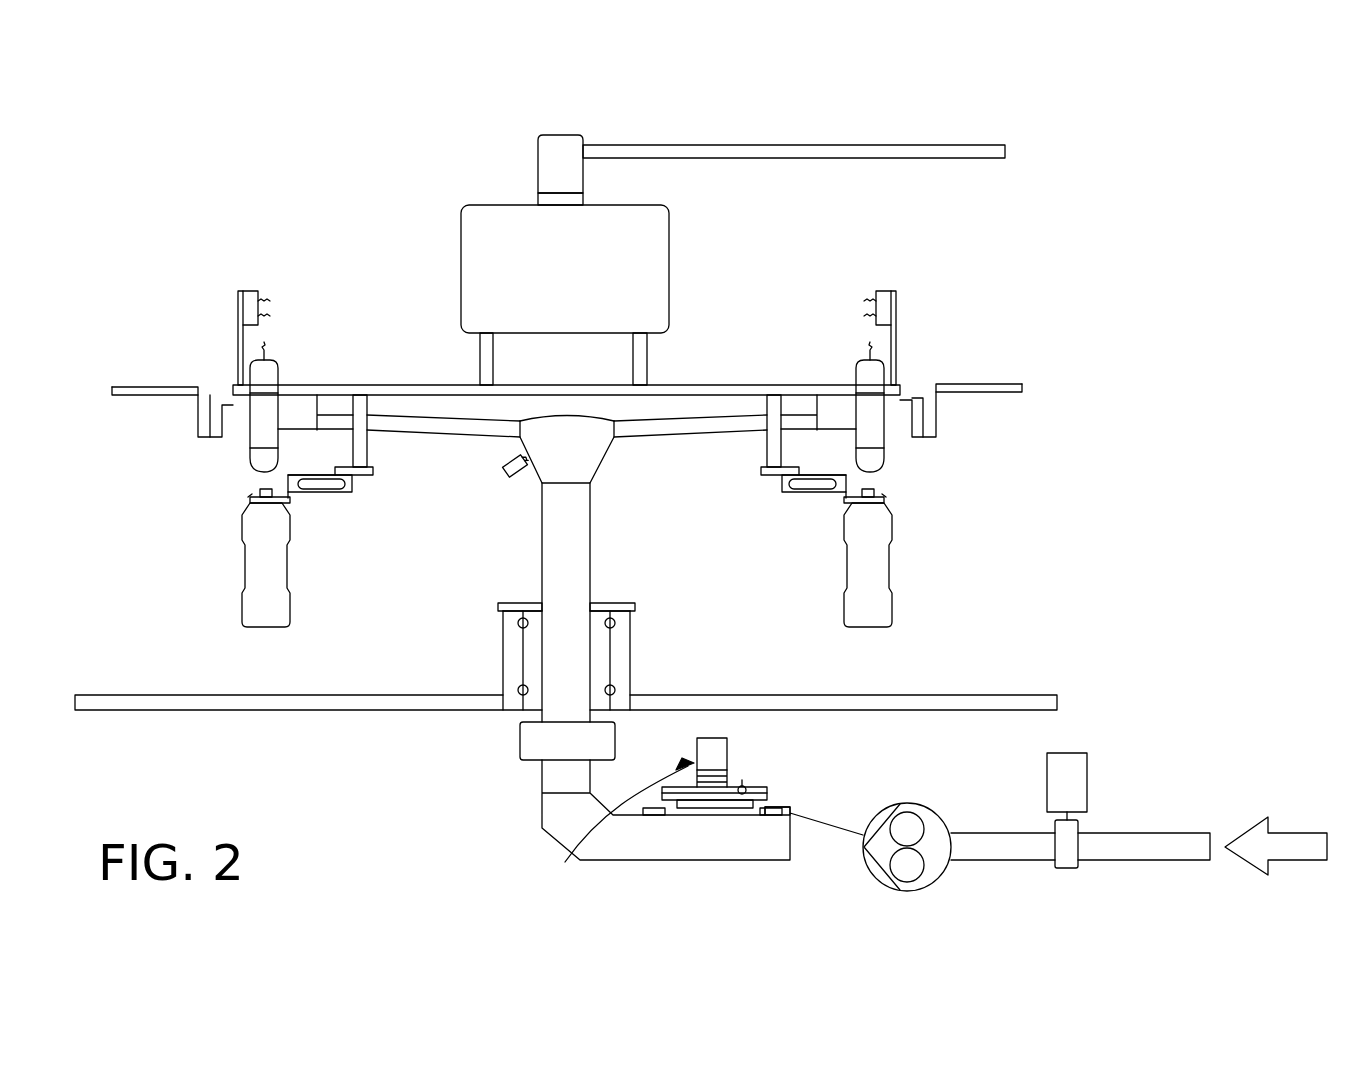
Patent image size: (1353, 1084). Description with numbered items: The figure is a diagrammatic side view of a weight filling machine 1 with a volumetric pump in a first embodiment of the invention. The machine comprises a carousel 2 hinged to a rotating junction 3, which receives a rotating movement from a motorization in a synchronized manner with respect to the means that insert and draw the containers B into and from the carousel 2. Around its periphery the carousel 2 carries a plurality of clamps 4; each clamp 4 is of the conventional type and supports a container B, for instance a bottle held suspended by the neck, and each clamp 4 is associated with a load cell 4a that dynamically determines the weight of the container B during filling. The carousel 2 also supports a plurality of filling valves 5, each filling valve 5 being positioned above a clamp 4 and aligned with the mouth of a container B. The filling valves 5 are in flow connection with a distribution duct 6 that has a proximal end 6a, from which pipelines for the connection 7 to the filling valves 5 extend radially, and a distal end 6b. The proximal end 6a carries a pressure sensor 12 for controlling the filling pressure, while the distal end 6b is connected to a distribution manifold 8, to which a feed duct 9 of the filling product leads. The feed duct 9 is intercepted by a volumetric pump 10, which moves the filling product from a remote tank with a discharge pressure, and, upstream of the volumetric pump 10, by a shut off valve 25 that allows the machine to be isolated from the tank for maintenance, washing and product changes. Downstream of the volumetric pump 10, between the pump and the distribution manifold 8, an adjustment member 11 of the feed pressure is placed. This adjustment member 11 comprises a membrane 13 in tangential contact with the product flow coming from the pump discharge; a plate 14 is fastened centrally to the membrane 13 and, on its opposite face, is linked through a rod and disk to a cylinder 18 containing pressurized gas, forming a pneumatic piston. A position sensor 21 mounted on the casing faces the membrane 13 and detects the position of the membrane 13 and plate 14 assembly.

The weight filling machine 1 is at (310, 183).
The carousel 2 is at (372, 385).
The rotating junction 3 is at (585, 140).
The clamp 4 is at (290, 503).
The load cell 4a is at (326, 494).
The filling valve 5 is at (250, 428).
The distribution duct 6 is at (592, 553).
The proximal end 6a is at (597, 470).
The distal end 6b is at (553, 710).
The pipeline for the connection 7 is at (452, 437).
The distribution manifold 8 is at (520, 748).
The feed duct 9 is at (598, 862).
The volumetric pump 10 is at (895, 805).
The adjustment member 11 is at (560, 860).
The pressure sensor 12 is at (505, 477).
The membrane 13 is at (782, 800).
The plate 14 is at (745, 818).
The cylinder 18 is at (742, 765).
The position sensor 21 is at (762, 790).
The shut off valve 25 is at (1090, 782).
The container B is at (240, 555).